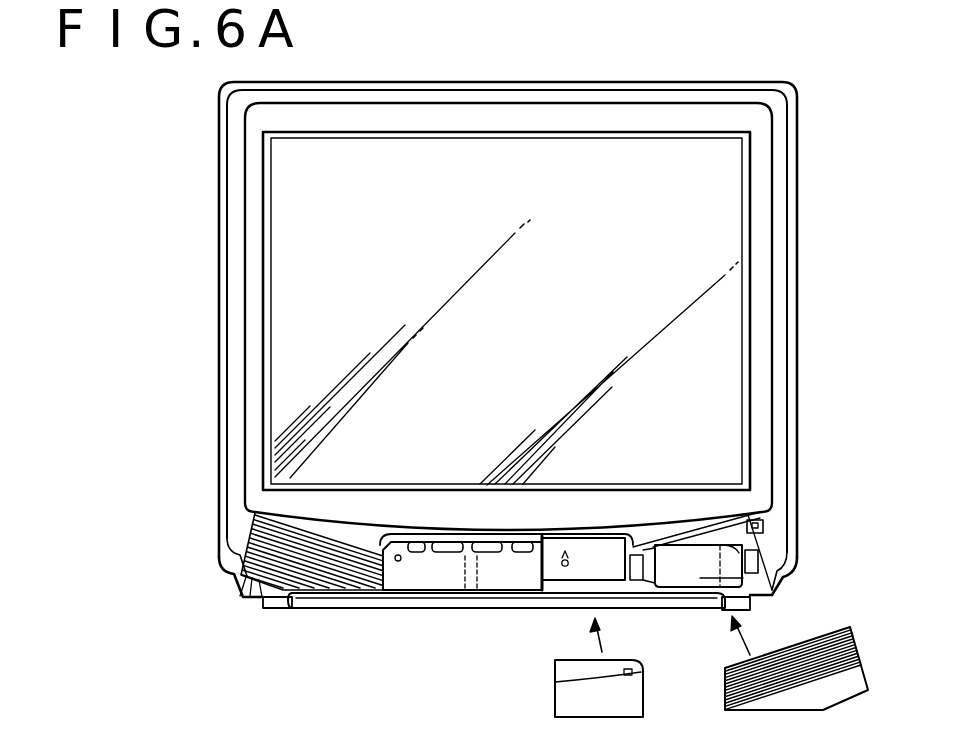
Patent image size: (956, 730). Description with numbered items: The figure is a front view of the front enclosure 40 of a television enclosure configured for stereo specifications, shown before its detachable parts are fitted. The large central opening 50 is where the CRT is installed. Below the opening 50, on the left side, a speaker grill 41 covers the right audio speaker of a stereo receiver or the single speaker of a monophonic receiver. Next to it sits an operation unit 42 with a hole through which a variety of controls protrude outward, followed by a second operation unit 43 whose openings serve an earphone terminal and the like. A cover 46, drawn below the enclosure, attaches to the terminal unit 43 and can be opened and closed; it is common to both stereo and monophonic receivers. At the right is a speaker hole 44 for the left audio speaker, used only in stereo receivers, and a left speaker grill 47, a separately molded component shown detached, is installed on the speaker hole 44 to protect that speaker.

The front enclosure 40 is at (186, 617).
The speaker grill 41 is at (264, 598).
The operation unit 42 is at (442, 577).
The operation unit 43 is at (566, 581).
The speaker hole 44 is at (694, 569).
The cover 46 is at (555, 700).
The left speaker grill 47 is at (725, 692).
The opening 50 is at (293, 313).